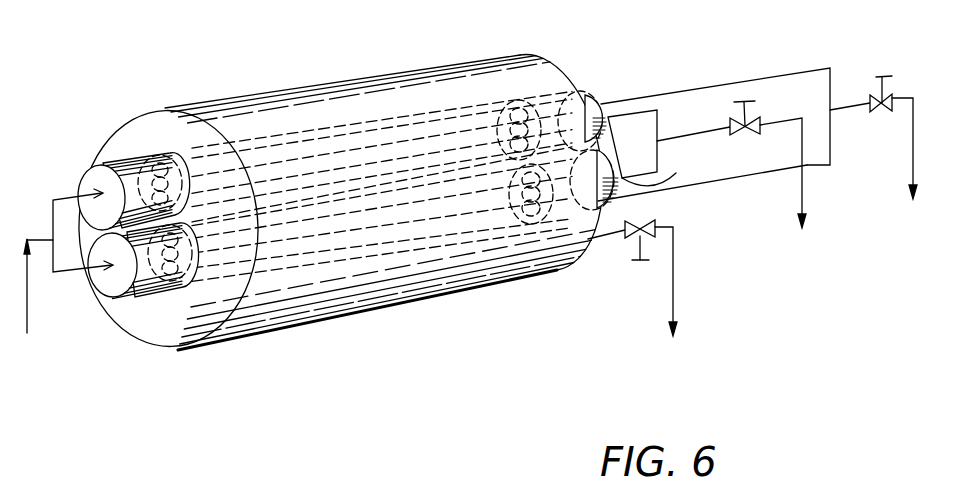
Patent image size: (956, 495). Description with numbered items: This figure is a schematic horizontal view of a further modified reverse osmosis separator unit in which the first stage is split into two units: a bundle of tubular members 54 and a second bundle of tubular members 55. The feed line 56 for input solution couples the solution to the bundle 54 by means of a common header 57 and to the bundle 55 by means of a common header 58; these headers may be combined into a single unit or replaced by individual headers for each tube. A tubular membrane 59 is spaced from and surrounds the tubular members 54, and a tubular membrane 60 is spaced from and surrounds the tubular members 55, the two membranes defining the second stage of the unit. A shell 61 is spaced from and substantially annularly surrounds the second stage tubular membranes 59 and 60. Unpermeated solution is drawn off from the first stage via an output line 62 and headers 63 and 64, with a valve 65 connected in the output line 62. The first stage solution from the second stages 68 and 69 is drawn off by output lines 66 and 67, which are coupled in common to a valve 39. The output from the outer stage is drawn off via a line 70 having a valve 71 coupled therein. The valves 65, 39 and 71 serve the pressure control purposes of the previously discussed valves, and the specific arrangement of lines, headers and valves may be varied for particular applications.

The valve 39 is at (882, 77).
The bundle of tubular members 54 is at (154, 145).
The second bundle of tubular members 55 is at (172, 283).
The feed line 56 is at (30, 293).
The common header 57 is at (86, 170).
The common header 58 is at (94, 292).
The tubular membrane 59 is at (289, 124).
The tubular membrane 60 is at (407, 250).
The shell 61 is at (389, 78).
The output line 62 is at (778, 118).
The header 63 is at (632, 112).
The header 64 is at (665, 171).
The valve 65 is at (745, 131).
The output line 66 is at (742, 78).
The output line 67 is at (740, 178).
The second stage 68 is at (193, 122).
The second stage 69 is at (213, 333).
The line 70 is at (548, 278).
The valve 71 is at (638, 266).